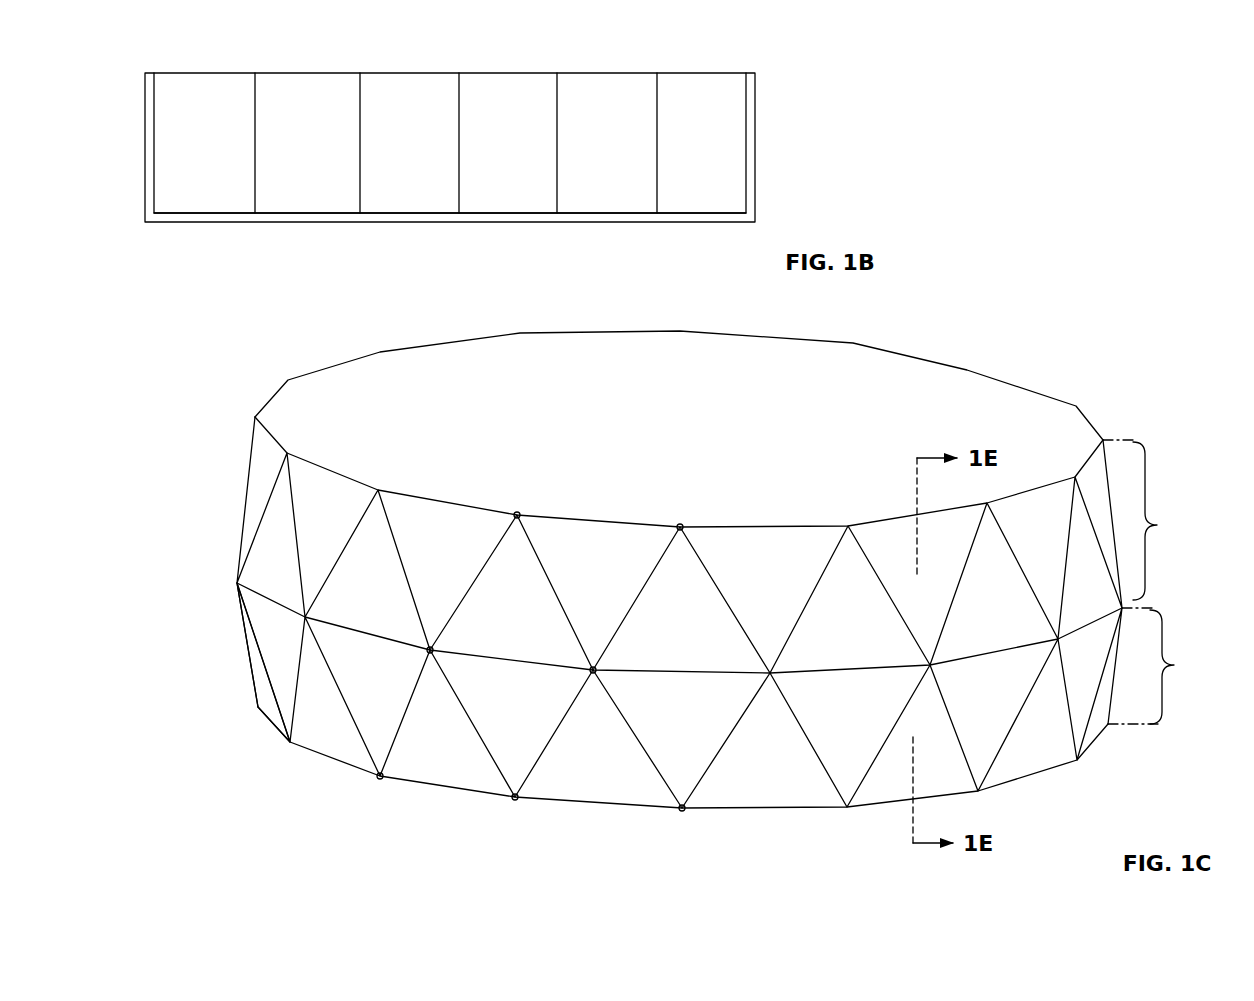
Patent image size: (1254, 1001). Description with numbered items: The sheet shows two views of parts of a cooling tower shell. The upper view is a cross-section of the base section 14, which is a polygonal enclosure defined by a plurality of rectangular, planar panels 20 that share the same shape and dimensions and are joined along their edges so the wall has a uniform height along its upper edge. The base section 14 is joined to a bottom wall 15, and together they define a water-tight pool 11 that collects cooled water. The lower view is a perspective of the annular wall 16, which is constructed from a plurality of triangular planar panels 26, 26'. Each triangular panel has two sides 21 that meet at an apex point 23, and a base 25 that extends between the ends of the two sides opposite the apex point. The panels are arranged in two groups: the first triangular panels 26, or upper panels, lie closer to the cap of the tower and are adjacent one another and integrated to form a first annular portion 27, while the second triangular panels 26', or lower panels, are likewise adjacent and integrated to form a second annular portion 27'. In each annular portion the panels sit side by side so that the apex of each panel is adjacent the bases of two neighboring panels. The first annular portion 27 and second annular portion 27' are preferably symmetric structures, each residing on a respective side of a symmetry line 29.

In FIG. 1B, the water-tight pool 11 is at (190, 175).
In FIG. 1B, the base section 14 is at (772, 105).
In FIG. 1B, the bottom wall 15 is at (687, 217).
In FIG. 1C, the annular wall 16 is at (1020, 348).
In FIG. 1B, the rectangular planar panel 20 is at (193, 88).
In FIG. 1C, the side 21 is at (338, 568).
In FIG. 1C, the apex point 23 is at (517, 515).
In FIG. 1C, the base 25 is at (578, 517).
In FIG. 1C, the first triangular panel 26 is at (671, 472).
In FIG. 1C, the second triangular panel 26' is at (660, 767).
In FIG. 1C, the first annular portion 27 is at (1144, 520).
In FIG. 1C, the second annular portion 27' is at (1160, 666).
In FIG. 1C, the symmetry line 29 is at (262, 598).